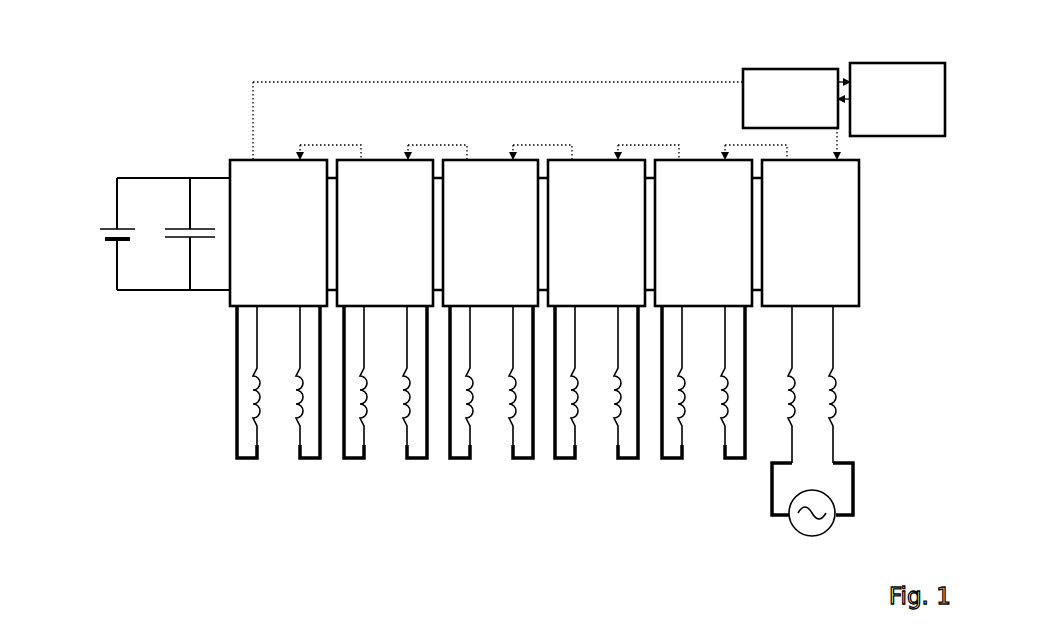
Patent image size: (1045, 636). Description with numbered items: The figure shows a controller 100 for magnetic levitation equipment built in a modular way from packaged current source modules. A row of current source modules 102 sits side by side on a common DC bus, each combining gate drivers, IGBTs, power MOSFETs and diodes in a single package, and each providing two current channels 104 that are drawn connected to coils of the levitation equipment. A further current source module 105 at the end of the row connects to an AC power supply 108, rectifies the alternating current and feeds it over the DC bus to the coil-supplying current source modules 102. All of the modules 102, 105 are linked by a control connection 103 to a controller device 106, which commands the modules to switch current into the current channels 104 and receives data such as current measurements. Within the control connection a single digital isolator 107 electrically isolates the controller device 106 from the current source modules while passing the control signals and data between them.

The controller 100 is at (98, 81).
The current source module 102 is at (496, 233).
The control connection 103 is at (257, 82).
The current channel 104 is at (238, 460).
The current source module 105 is at (810, 311).
The controller device 106 is at (897, 99).
The digital isolator 107 is at (796, 98).
The AC power supply 108 is at (794, 533).